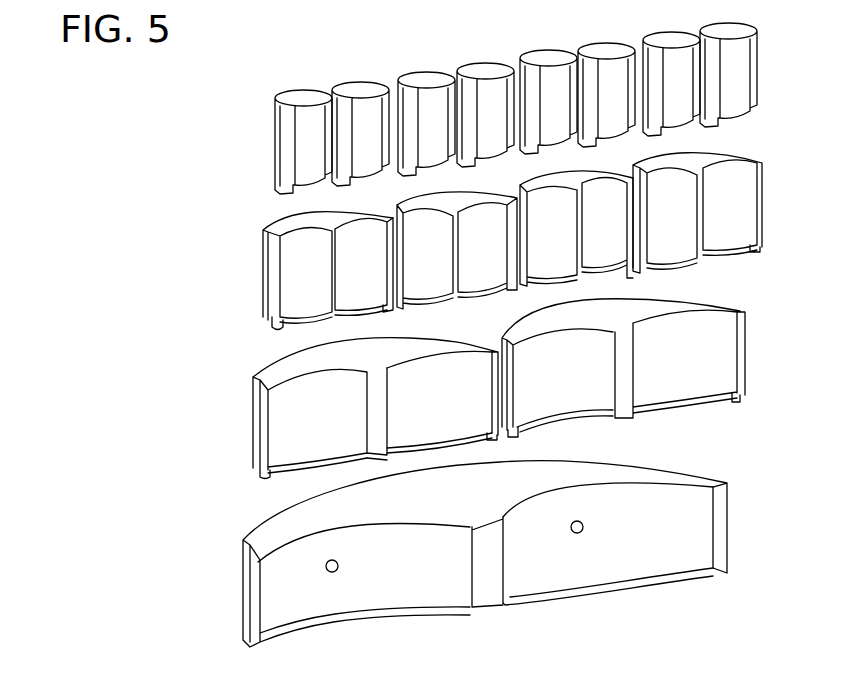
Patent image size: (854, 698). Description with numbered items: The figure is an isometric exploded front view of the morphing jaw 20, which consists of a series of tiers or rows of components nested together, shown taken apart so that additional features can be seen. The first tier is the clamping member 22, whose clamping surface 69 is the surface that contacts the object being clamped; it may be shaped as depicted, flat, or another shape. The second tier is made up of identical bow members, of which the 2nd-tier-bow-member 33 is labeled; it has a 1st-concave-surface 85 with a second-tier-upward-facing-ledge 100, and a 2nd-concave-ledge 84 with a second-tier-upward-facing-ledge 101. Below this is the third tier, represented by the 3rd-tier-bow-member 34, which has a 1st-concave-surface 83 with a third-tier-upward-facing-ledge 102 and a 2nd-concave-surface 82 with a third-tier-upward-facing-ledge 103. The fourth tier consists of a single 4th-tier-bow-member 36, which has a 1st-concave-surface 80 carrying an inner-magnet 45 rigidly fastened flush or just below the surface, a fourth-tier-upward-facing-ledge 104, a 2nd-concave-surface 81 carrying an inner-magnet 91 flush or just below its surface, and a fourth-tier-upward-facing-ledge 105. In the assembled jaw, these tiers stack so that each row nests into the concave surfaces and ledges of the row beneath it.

The morphing jaw 20 is at (328, 36).
The clamping member 22 is at (293, 98).
The clamping surface 69 is at (310, 140).
The 2nd-tier-bow-member 33 is at (317, 222).
The 1st-concave-surface 85 is at (297, 267).
The 2nd-concave-ledge 84 is at (350, 287).
The second-tier-upward-facing-ledge 100 is at (280, 323).
The second-tier-upward-facing-ledge 101 is at (397, 302).
The 3rd-tier-bow-member 34 is at (300, 362).
The 1st-concave-surface 83 is at (297, 418).
The 2nd-concave-surface 82 is at (413, 398).
The third-tier-upward-facing-ledge 102 is at (333, 457).
The third-tier-upward-facing-ledge 103 is at (363, 460).
The 4th-tier-bow-member 36 is at (270, 523).
The 1st-concave-surface 80 is at (413, 577).
The 2nd-concave-surface 81 is at (647, 520).
The inner-magnet 45 is at (334, 572).
The inner-magnet 91 is at (580, 532).
The fourth-tier-upward-facing-ledge 104 is at (260, 633).
The fourth-tier-upward-facing-ledge 105 is at (515, 597).